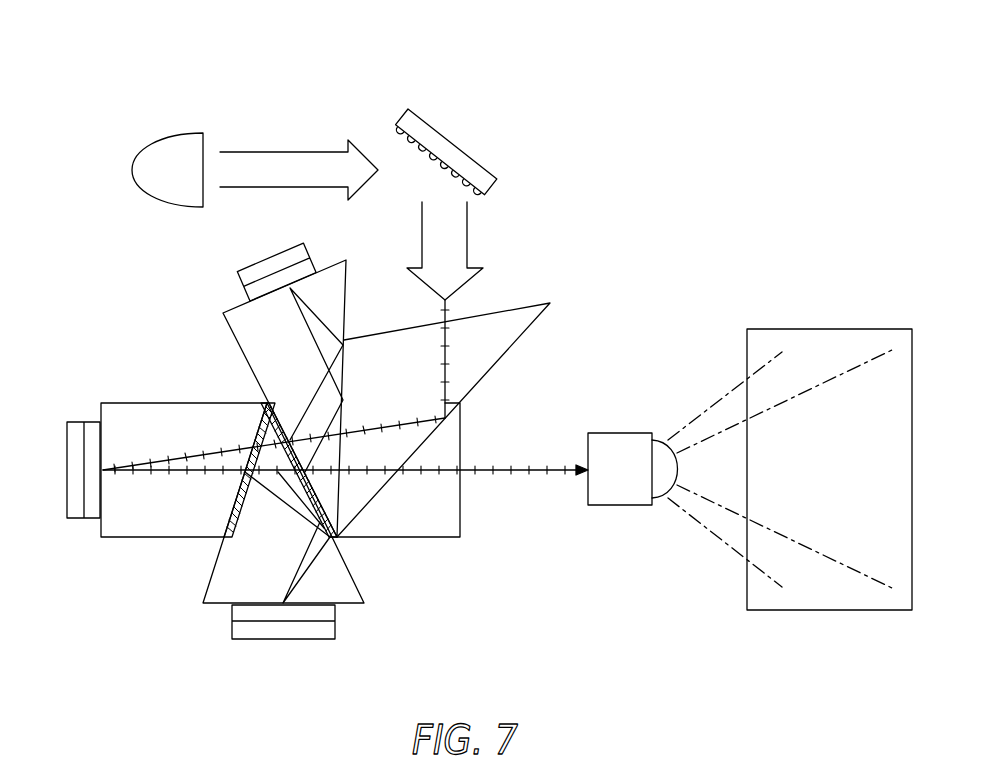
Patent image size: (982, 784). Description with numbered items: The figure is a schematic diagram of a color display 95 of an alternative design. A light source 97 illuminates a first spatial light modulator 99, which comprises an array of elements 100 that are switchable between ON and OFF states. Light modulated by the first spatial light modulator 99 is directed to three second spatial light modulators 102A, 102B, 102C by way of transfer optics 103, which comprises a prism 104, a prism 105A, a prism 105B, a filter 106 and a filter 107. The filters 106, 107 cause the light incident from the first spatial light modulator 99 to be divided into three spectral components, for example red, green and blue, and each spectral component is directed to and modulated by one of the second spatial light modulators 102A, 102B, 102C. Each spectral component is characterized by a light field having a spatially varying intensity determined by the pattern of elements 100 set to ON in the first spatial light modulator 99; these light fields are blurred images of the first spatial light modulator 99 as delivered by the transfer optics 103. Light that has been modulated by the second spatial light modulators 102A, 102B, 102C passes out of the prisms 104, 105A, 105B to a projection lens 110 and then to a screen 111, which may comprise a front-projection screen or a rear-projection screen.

The color display 95 is at (238, 68).
The light source 97 is at (182, 147).
The first spatial light modulator 99 is at (440, 146).
The elements 100 is at (399, 146).
The second spatial light modulator 102A is at (268, 256).
The second spatial light modulator 102B is at (263, 640).
The second spatial light modulator 102C is at (72, 447).
The transfer optics 103 is at (420, 595).
The prism 104 is at (487, 340).
The prism 105A is at (233, 568).
The prism 105B is at (250, 322).
The filter 106 is at (287, 418).
The filter 107 is at (248, 432).
The projection lens 110 is at (622, 492).
The screen 111 is at (815, 337).